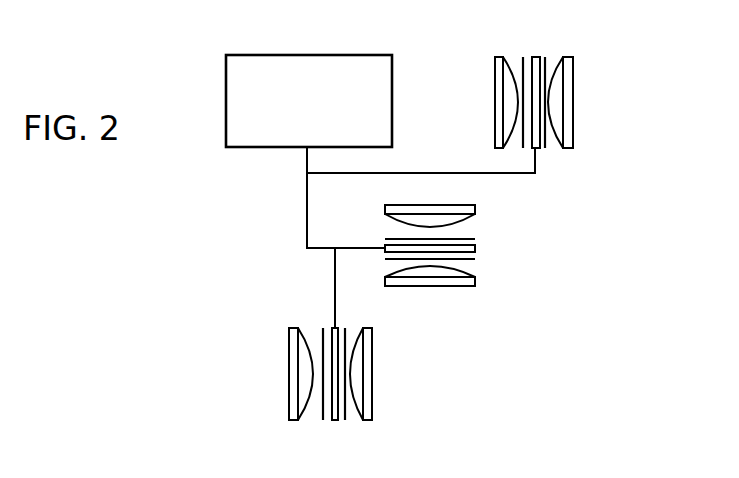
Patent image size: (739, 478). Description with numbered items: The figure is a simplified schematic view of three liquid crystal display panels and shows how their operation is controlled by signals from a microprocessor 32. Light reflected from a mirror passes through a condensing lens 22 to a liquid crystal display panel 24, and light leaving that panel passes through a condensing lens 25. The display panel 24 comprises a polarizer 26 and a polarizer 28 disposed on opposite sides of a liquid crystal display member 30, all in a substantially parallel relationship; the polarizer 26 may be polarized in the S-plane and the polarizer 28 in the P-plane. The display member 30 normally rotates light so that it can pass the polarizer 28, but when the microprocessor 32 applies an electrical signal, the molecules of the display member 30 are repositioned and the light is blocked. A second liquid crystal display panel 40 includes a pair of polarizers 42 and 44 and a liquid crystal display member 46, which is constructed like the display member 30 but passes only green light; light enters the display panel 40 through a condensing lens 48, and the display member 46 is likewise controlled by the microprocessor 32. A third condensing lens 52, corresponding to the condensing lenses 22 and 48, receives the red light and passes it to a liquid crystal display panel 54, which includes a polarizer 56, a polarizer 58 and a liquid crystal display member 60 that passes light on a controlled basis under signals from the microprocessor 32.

The condensing lens 22 is at (573, 80).
The liquid crystal display panel 24 is at (540, 93).
The condensing lens 25 is at (495, 90).
The polarizer 26 is at (547, 147).
The polarizer 28 is at (523, 144).
The liquid crystal display member 30 is at (536, 57).
The microprocessor 32 is at (373, 55).
The liquid crystal display panel 40 is at (493, 265).
The polarizer 42 is at (472, 266).
The polarizer 44 is at (473, 228).
The liquid crystal display member 46 is at (477, 248).
The condensing lens 48 is at (442, 286).
The condensing lens 52 is at (372, 365).
The liquid crystal display panel 54 is at (340, 400).
The polarizer 56 is at (345, 416).
The polarizer 58 is at (323, 421).
The liquid crystal display member 60 is at (336, 421).